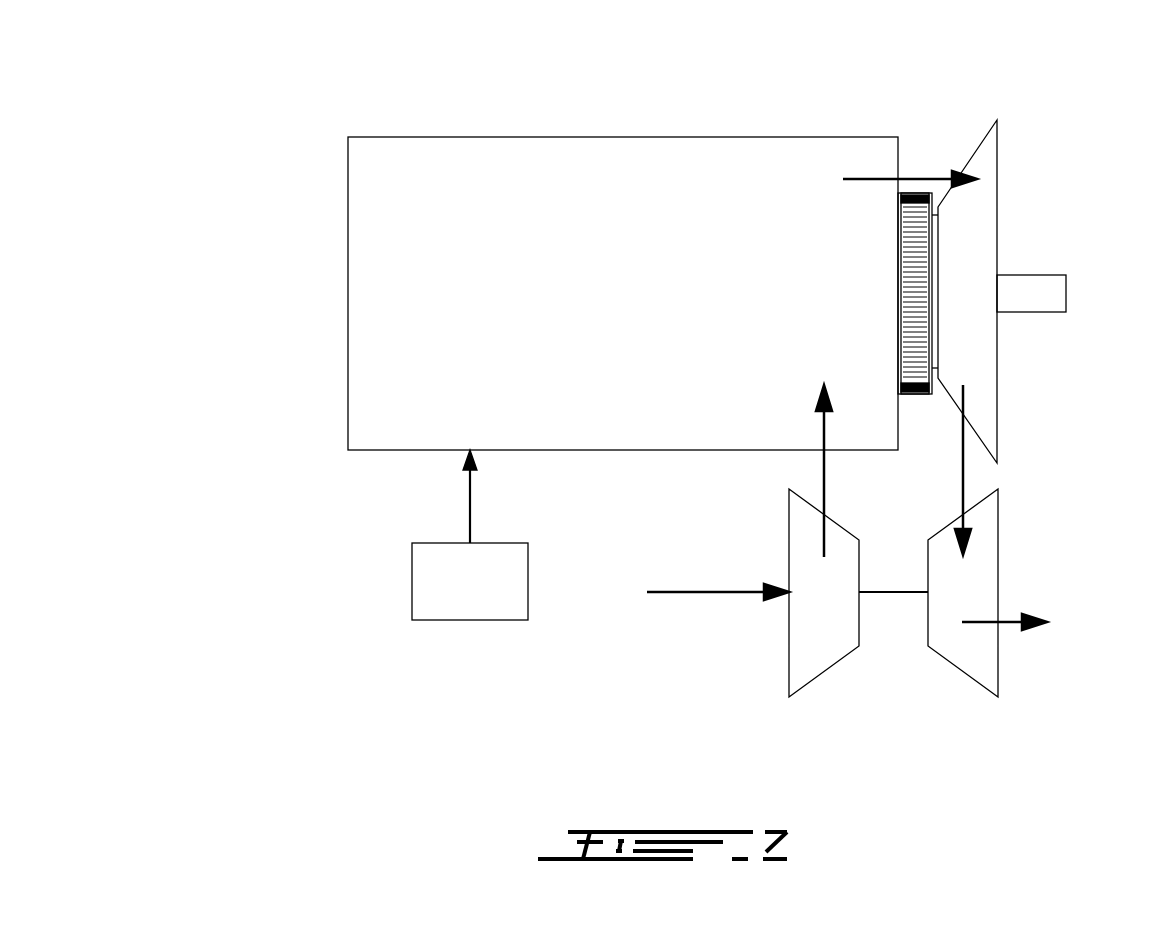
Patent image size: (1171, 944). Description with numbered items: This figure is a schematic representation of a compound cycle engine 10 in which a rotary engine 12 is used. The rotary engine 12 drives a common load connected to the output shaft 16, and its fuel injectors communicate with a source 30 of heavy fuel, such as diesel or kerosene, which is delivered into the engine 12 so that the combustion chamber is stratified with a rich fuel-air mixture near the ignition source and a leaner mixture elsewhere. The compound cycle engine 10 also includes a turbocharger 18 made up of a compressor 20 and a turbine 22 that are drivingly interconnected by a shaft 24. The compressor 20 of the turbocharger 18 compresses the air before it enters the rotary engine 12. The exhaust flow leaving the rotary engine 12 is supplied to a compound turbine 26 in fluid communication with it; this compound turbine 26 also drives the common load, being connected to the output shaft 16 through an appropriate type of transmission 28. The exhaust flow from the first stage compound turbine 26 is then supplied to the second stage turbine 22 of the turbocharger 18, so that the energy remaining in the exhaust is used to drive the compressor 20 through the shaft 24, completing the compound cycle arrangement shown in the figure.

The compound cycle engine 10 is at (267, 195).
The rotary engine 12 is at (510, 180).
The output shaft 16 is at (1040, 292).
The turbocharger 18 is at (898, 673).
The compressor 20 is at (789, 633).
The turbine 22 is at (972, 595).
The shaft 24 is at (888, 595).
The compound turbine 26 is at (983, 267).
The transmission 28 is at (915, 262).
The source 30 is at (467, 603).